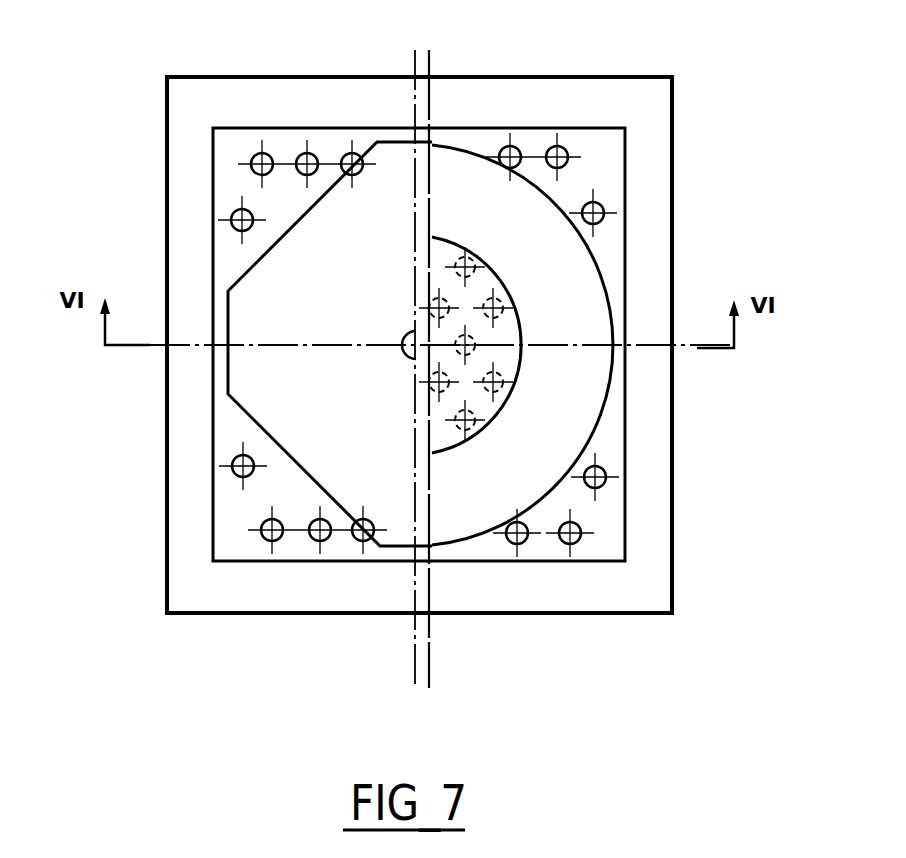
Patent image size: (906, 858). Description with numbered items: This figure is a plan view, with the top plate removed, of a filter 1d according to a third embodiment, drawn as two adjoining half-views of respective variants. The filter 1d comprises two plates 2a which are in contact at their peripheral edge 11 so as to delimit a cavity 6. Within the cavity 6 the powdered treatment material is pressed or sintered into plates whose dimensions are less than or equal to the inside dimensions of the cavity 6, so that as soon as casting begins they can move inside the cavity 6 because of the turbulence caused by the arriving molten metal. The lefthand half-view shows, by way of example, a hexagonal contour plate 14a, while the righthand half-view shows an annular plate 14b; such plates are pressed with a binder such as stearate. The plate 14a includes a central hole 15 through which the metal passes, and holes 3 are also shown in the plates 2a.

The filter 1d is at (698, 106).
The plate 2a is at (674, 156).
The peripheral edge 11 is at (193, 108).
The cavity 6 is at (424, 344).
The hexagonal contour plate 14a is at (266, 253).
The annular plate 14b is at (588, 290).
The fastening holes 3 is at (258, 152).
The central hole 15 is at (405, 356).